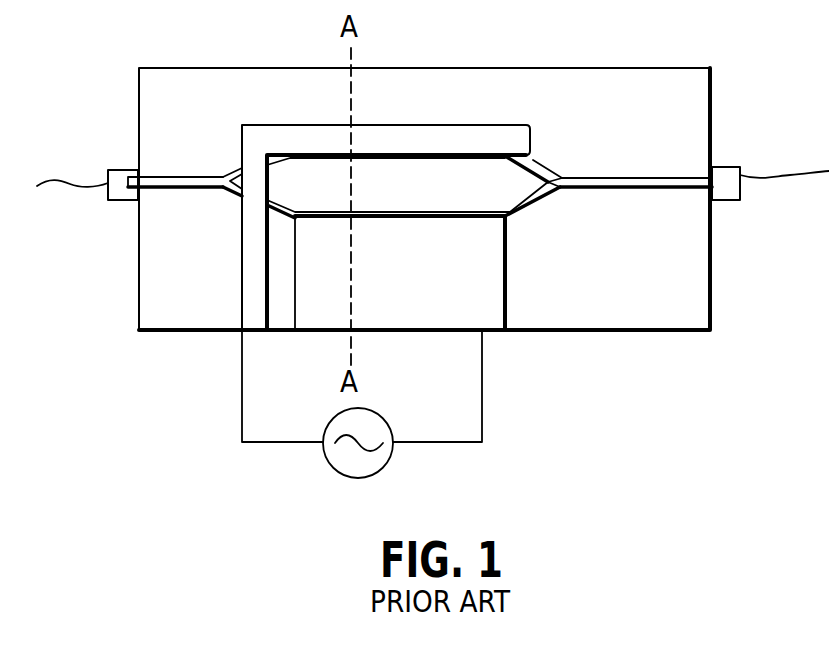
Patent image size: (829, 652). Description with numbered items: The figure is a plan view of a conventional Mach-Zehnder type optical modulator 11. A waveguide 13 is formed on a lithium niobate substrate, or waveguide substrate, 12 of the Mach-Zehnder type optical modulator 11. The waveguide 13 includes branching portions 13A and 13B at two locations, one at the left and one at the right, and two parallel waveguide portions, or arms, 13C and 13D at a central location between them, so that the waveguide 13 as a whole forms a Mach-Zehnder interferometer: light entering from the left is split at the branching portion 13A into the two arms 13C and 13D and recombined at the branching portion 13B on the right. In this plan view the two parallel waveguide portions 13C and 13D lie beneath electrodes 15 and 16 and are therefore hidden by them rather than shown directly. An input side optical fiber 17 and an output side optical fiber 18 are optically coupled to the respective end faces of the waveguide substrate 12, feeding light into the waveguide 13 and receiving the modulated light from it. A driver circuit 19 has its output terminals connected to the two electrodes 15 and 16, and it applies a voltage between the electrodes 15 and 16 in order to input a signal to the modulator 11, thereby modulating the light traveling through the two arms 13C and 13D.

The Mach-Zehnder type optical modulator 11 is at (734, 46).
The lithium niobate substrate 12 is at (172, 85).
The waveguide 13 is at (187, 190).
The branching portion 13A is at (228, 172).
The branching portion 13B is at (547, 168).
The parallel waveguide portion 13C is at (400, 122).
The parallel waveguide portion 13D is at (384, 207).
The electrode 15 is at (500, 125).
The electrode 16 is at (494, 332).
The input side optical fiber 17 is at (117, 168).
The output side optical fiber 18 is at (722, 167).
The driver circuit 19 is at (330, 452).